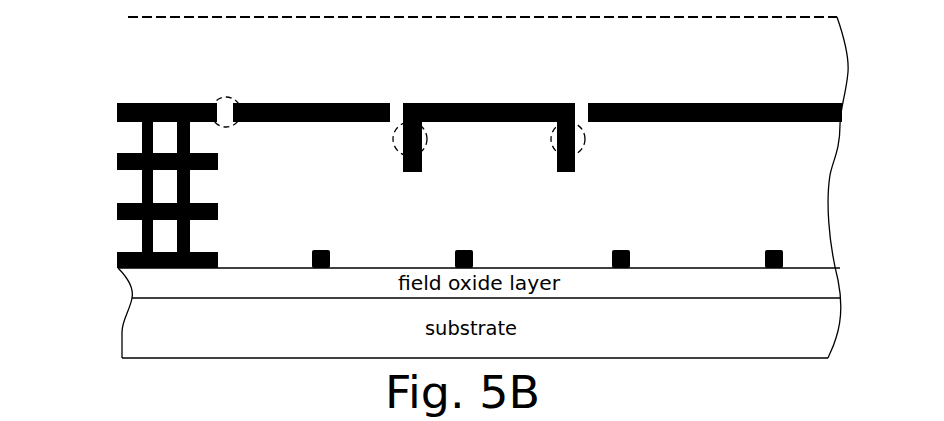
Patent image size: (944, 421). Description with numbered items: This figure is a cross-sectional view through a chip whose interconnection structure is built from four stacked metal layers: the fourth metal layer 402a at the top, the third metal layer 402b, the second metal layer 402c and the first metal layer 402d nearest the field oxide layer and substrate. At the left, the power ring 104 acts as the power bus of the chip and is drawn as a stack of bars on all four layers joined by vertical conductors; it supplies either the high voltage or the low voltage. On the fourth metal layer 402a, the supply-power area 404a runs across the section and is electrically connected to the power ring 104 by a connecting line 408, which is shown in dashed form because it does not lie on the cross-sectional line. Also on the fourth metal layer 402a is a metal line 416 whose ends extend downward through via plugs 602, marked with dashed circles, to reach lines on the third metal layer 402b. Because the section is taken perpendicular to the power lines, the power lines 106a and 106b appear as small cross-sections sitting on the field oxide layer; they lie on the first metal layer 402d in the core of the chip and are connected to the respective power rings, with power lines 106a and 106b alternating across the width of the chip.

The power ring 104 is at (128, 168).
The fourth metal layer 402a is at (117, 113).
The third metal layer 402b is at (117, 161).
The second metal layer 402c is at (117, 211).
The first metal layer 402d is at (117, 259).
The supply-power area 404a is at (327, 102).
The connecting line 408 is at (235, 100).
The metal line 416 is at (485, 103).
The via plug 602 is at (427, 138).
The power line 106a is at (322, 250).
The power line 106b is at (465, 250).